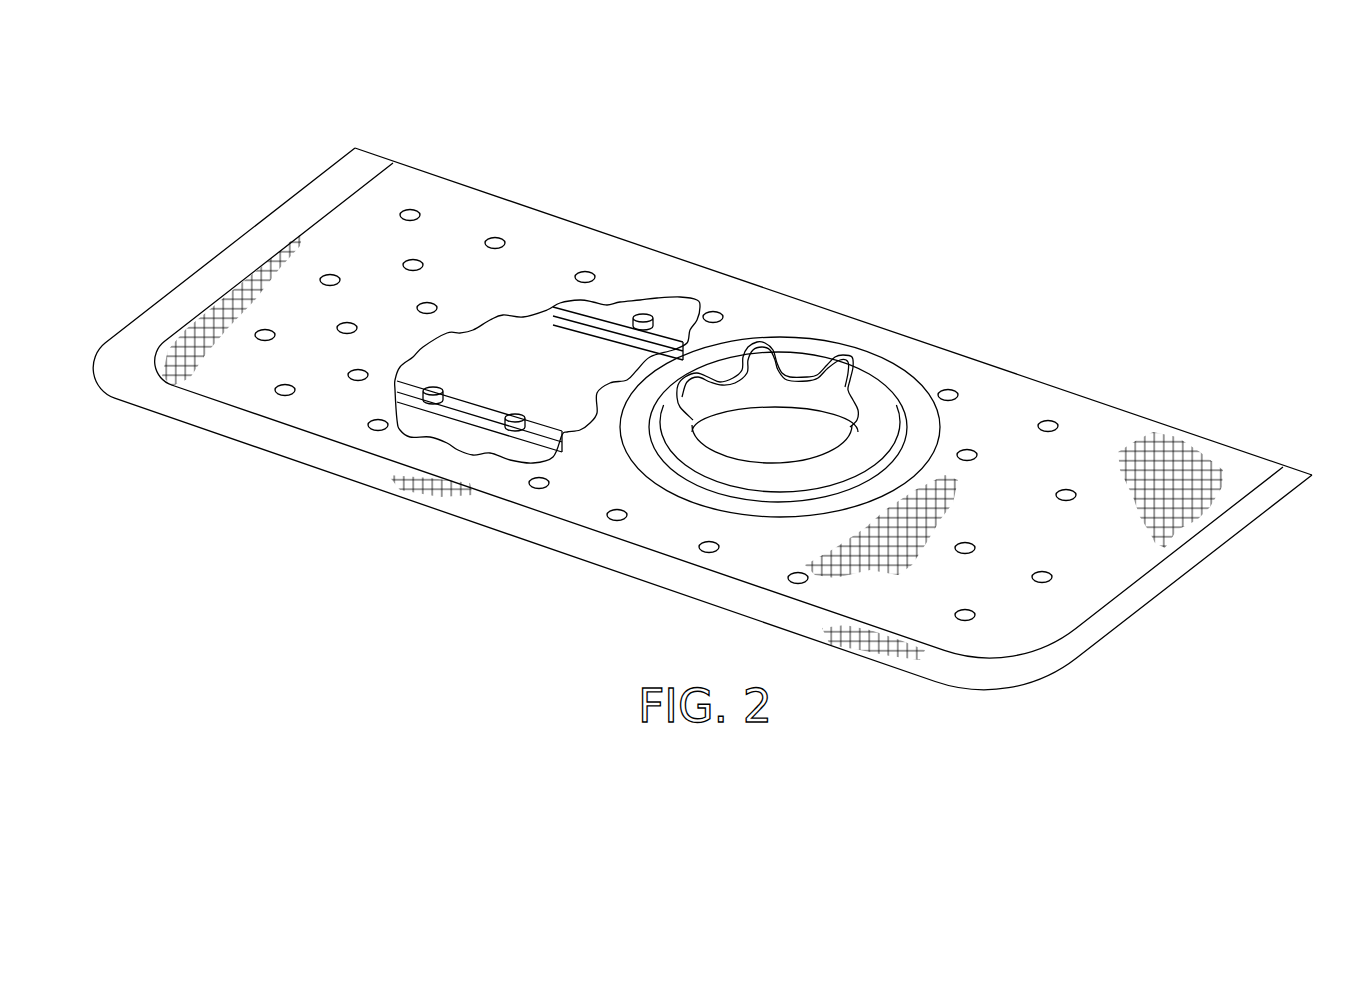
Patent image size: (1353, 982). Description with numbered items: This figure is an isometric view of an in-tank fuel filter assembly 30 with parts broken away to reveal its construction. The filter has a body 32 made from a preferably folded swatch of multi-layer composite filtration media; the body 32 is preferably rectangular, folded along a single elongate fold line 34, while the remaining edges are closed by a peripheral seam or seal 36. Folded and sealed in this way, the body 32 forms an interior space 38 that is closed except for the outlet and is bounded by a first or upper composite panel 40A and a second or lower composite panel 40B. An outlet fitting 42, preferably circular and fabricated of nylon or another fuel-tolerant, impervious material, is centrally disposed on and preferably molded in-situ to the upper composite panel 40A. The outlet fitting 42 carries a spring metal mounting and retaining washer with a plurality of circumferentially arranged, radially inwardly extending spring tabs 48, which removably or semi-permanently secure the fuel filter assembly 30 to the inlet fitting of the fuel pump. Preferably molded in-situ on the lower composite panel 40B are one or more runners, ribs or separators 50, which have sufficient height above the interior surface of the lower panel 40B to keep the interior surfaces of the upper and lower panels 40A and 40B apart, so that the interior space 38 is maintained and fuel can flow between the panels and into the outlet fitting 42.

The in-tank fuel filter assembly 30 is at (702, 363).
The body 32 is at (1108, 557).
The fold line 34 is at (423, 170).
The peripheral seam or seal 36 is at (220, 422).
The interior space 38 is at (463, 363).
The first or upper composite panel 40A is at (460, 247).
The second or lower composite panel 40B is at (495, 360).
The outlet fitting 42 is at (900, 392).
The spring tabs 48 is at (798, 365).
The runners, ribs or separators 50 is at (645, 318).